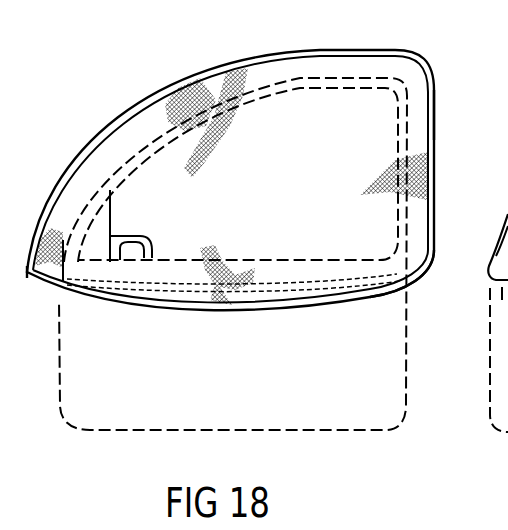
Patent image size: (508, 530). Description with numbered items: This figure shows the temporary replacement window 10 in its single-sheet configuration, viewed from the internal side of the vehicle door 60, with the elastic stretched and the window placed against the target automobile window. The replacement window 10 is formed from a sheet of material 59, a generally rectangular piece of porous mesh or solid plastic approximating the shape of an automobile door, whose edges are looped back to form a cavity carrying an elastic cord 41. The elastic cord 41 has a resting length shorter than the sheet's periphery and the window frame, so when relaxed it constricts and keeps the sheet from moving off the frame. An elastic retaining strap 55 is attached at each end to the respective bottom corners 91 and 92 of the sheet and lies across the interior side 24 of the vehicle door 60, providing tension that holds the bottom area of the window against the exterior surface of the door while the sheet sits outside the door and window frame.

The replacement window 10 is at (438, 117).
The interior side of the vehicle door 24 is at (122, 377).
The elastic cord 41 is at (183, 80).
The retaining strap 55 is at (243, 310).
The sheet of material 59 is at (339, 125).
The vehicle door 60 is at (345, 440).
The bottom corner 91 is at (28, 278).
The bottom corner 92 is at (420, 282).